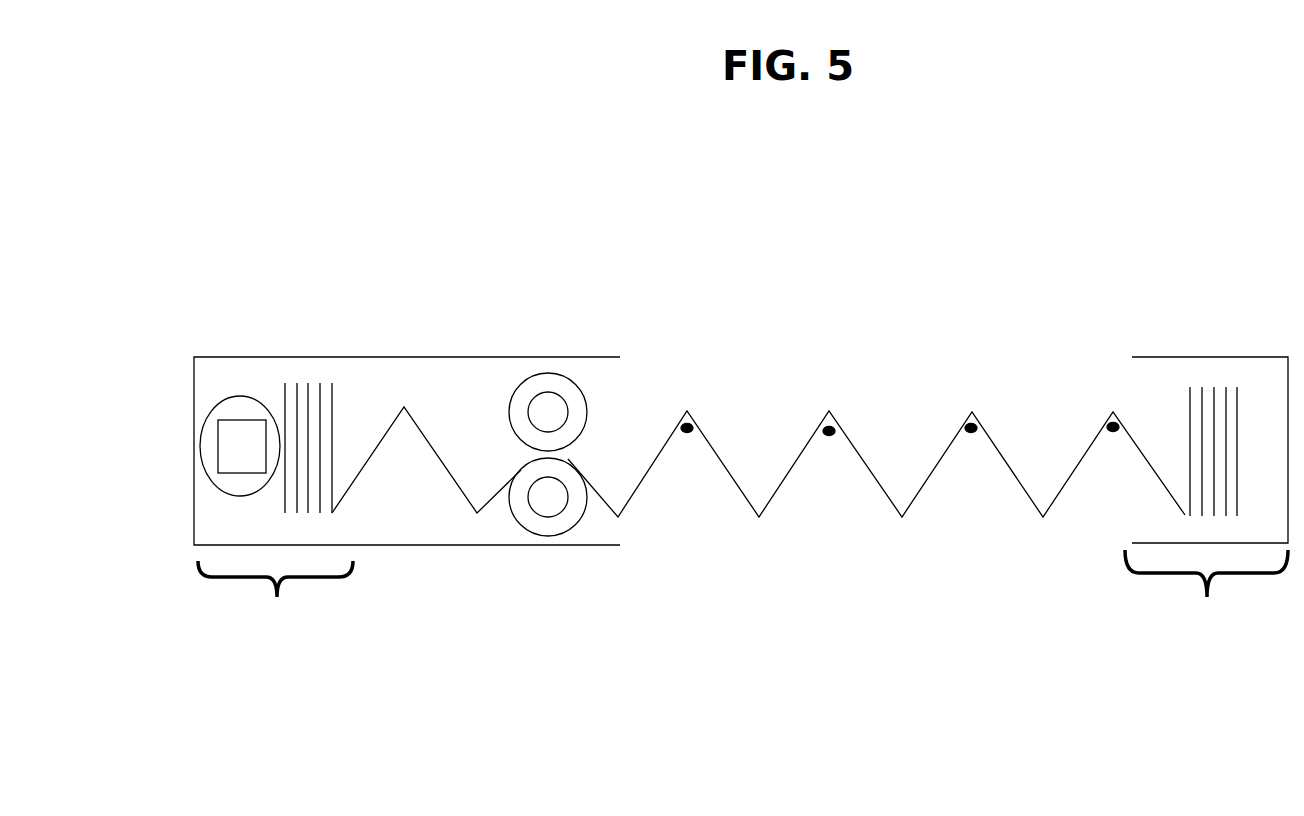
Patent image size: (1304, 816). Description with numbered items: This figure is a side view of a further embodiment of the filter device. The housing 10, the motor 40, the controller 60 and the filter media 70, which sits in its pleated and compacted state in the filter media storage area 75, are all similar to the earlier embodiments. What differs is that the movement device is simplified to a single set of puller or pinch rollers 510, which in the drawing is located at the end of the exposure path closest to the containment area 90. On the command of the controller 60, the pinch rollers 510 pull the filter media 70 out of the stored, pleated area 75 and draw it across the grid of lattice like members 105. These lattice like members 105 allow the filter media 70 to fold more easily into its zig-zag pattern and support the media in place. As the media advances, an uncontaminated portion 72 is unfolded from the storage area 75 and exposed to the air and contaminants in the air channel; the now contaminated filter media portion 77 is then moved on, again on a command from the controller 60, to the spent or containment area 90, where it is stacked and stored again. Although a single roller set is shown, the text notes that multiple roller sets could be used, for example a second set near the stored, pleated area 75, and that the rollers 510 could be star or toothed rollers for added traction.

The housing 10 is at (432, 355).
The motor 40 is at (220, 403).
The controller 60 is at (239, 418).
The contaminated filter media portion 77 is at (297, 378).
The filter media 70 is at (772, 430).
The set of puller or pinch rollers 510 is at (513, 515).
The lattice like members 105 is at (961, 437).
The uncontaminated portion 72 is at (1208, 357).
The spent or containment area 90 is at (275, 635).
The filter media storage area 75 is at (1206, 624).